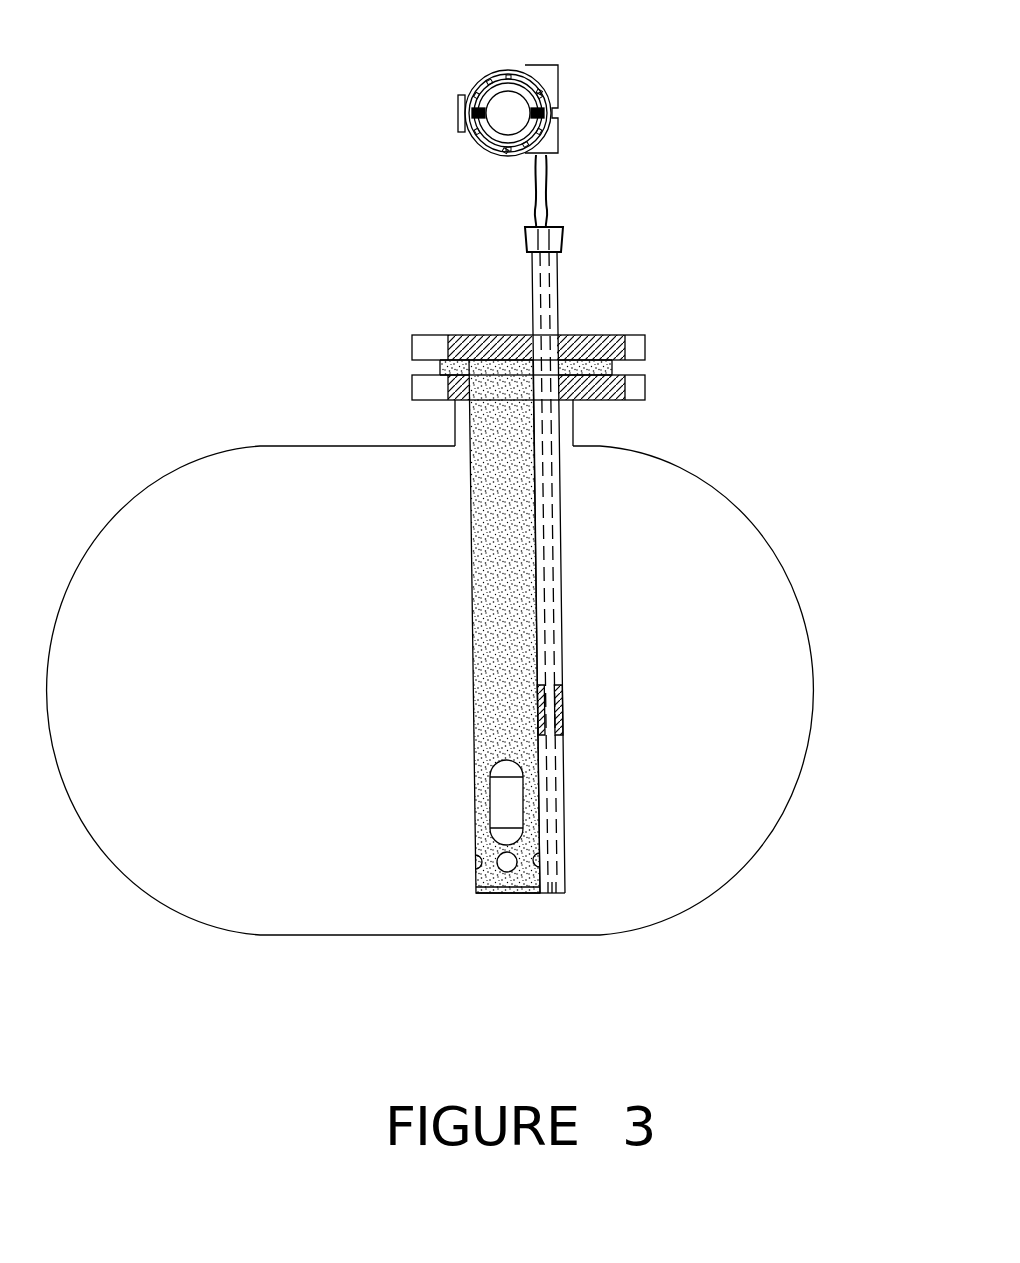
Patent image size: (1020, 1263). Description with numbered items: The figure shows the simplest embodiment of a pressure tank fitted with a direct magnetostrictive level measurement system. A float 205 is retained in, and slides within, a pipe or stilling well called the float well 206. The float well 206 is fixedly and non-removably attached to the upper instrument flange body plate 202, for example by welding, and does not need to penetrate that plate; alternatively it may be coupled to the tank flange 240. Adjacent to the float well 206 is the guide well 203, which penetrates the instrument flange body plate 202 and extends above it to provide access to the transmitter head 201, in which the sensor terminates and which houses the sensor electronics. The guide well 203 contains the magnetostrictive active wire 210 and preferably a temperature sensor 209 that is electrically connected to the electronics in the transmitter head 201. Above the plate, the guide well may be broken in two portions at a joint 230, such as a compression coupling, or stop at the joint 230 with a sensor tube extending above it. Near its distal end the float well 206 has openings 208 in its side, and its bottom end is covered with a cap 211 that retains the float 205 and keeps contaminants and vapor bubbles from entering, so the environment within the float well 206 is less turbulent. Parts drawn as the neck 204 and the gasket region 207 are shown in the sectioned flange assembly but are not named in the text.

The transmitter head 201 is at (467, 88).
The instrument flange body plate 202 is at (648, 340).
The guide well 203 is at (563, 648).
The tank neck 204 is at (450, 425).
The float 205 is at (498, 795).
The float well 206 is at (471, 596).
The gasket 207 is at (413, 368).
The openings 208 is at (495, 853).
The temperature sensor 209 is at (560, 897).
The magnetostrictive active wire 210 is at (562, 712).
The cap 211 is at (490, 897).
The joint 230 is at (573, 246).
The tank flange 240 is at (648, 385).